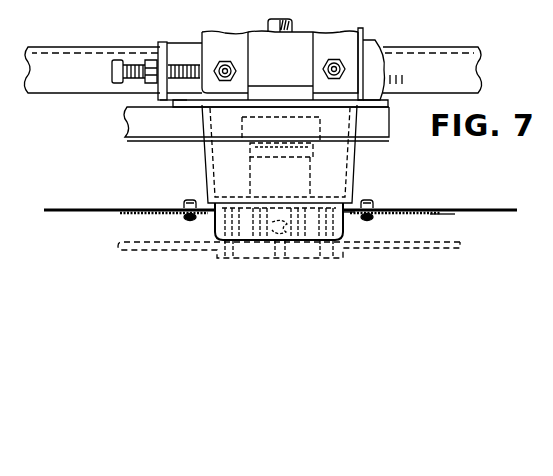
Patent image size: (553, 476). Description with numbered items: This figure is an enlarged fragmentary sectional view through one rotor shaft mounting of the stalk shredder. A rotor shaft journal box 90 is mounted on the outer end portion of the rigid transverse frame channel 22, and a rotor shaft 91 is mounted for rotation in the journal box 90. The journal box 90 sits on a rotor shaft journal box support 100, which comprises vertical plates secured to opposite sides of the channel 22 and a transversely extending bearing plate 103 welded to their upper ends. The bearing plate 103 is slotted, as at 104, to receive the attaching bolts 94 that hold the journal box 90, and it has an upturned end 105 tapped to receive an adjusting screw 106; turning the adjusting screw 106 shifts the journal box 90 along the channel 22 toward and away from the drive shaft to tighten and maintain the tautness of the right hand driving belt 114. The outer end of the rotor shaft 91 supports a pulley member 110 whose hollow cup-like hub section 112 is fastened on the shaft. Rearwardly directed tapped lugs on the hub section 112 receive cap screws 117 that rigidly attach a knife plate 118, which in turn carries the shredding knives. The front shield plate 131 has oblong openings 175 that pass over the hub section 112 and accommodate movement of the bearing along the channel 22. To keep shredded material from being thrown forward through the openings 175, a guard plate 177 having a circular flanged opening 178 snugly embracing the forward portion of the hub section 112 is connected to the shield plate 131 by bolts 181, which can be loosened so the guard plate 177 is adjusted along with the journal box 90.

The transverse frame channel 22 is at (470, 76).
The rotor shaft journal box 90 is at (309, 45).
The rotor shaft 91 is at (280, 22).
The attaching bolts 94 is at (318, 68).
The rotor shaft journal box support 100 is at (388, 60).
The bearing plate 103 is at (186, 47).
The slot 104 is at (362, 66).
The upturned end 105 is at (160, 43).
The adjusting screw 106 is at (113, 70).
The pulley member 110 is at (204, 159).
The hub section 112 is at (355, 167).
The right hand driving belt 114 is at (129, 125).
The cap screws 117 is at (320, 258).
The knife plate 118 is at (203, 252).
The front shield plate 131 is at (493, 208).
The oblong openings 175 is at (185, 206).
The guard plate 177 is at (440, 214).
The circular flanged opening 178 is at (347, 216).
The bolts 181 is at (190, 219).